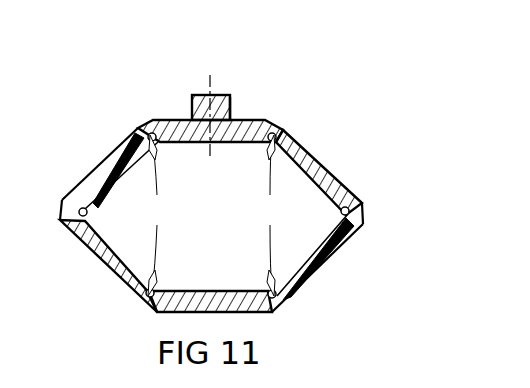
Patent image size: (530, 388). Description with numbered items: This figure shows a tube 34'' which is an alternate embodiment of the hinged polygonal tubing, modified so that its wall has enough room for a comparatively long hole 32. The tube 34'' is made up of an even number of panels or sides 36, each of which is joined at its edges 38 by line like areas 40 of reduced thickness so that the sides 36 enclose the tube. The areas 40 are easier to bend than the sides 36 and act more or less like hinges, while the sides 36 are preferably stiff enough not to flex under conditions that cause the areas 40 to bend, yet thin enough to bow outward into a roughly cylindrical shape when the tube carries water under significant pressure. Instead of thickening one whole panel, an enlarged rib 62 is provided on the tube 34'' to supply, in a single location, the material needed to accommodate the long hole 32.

The hole 32 is at (206, 98).
The enlarged rib 62 is at (231, 108).
The panels or sides 36 is at (180, 120).
The line like areas of reduced thickness 40 is at (148, 128).
The edges 38 is at (87, 210).
The tube 34'' is at (377, 121).